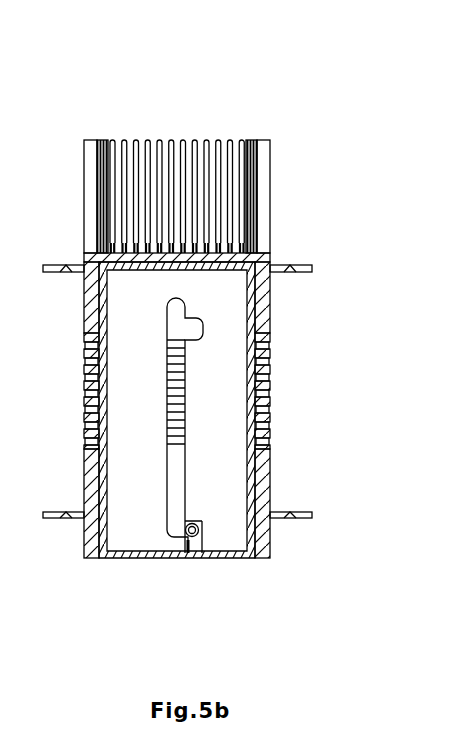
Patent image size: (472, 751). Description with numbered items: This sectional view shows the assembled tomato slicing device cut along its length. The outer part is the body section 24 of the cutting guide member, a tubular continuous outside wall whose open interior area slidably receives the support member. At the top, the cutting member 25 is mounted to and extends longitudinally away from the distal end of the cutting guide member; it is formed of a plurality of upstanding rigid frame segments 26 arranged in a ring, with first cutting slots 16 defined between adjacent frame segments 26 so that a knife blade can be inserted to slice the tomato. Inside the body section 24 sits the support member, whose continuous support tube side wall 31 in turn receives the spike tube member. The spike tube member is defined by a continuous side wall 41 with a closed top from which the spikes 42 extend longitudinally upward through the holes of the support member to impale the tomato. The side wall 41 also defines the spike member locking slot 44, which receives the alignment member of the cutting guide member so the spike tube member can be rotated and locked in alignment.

The first cutting slots 16 is at (229, 155).
The body section 24 is at (262, 490).
The cutting member 25 is at (322, 237).
The frame segments 26 is at (172, 140).
The support tube side wall 31 is at (250, 468).
The continuous side wall 41 is at (247, 358).
The spikes 42 is at (196, 247).
The spike member locking slot 44 is at (146, 516).